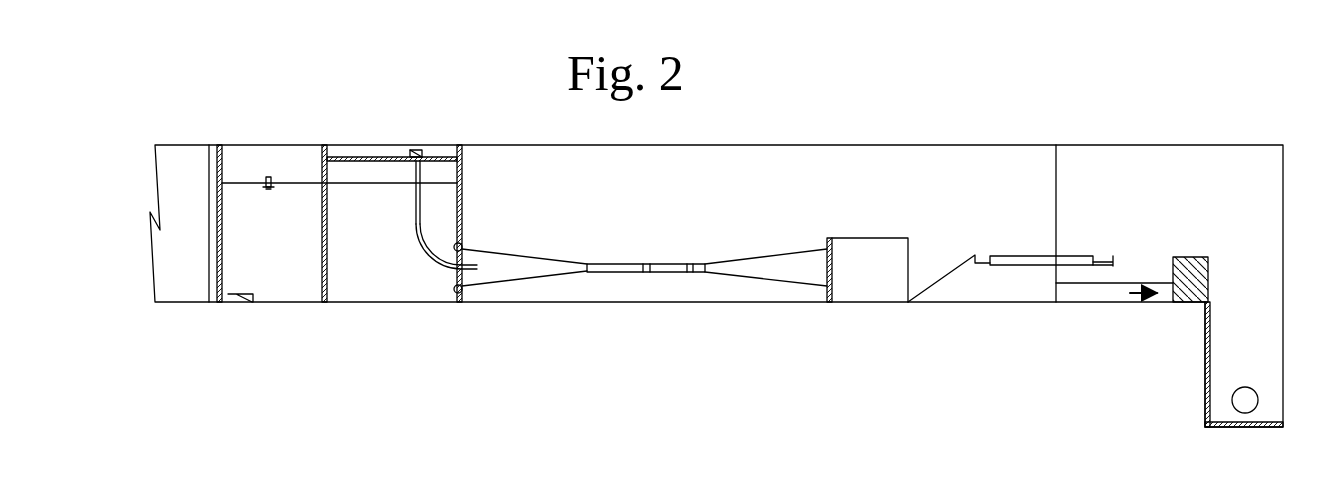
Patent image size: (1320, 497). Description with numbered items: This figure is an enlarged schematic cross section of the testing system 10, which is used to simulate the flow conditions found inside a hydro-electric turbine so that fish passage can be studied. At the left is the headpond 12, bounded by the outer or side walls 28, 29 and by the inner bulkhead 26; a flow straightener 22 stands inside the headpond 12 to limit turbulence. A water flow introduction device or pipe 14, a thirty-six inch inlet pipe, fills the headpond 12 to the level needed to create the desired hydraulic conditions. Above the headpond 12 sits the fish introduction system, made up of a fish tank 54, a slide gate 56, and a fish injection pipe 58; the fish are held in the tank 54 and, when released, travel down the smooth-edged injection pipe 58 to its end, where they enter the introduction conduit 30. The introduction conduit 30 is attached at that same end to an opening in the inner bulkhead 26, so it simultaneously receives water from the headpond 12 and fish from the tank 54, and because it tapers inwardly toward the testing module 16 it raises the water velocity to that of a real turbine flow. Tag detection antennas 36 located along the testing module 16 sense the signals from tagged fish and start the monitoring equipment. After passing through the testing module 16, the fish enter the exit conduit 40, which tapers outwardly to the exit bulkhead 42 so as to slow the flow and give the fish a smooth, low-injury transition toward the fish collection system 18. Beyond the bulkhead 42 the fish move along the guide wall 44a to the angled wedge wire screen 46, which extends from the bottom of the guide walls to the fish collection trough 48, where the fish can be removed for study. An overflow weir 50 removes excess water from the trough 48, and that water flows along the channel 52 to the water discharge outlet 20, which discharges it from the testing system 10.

The testing system 10 is at (800, 355).
The headpond 12 is at (358, 115).
The water flow introduction device or pipe 14 is at (260, 303).
The testing module 16 is at (613, 273).
The fish collection system 18 is at (970, 193).
The water discharge outlet 20 is at (1232, 398).
The flow straightener 22 is at (330, 276).
The inner bulkhead 26 is at (463, 213).
The outer wall or side wall 28 is at (238, 163).
The outer wall or side wall 29 is at (220, 303).
The introduction conduit 30 is at (557, 263).
The tag detection antennas 36 is at (647, 273).
The exit conduit 40 is at (750, 271).
The exit bulkhead 42 is at (838, 249).
The guide wall 44a is at (872, 278).
The screen 46 is at (942, 277).
The fish collection trough 48 is at (1028, 268).
The overflow weir 50 is at (1103, 266).
The channel 52 is at (1117, 298).
The fish tank 54 is at (410, 153).
The slide gate 56 is at (421, 172).
The fish injection pipe 58 is at (437, 257).